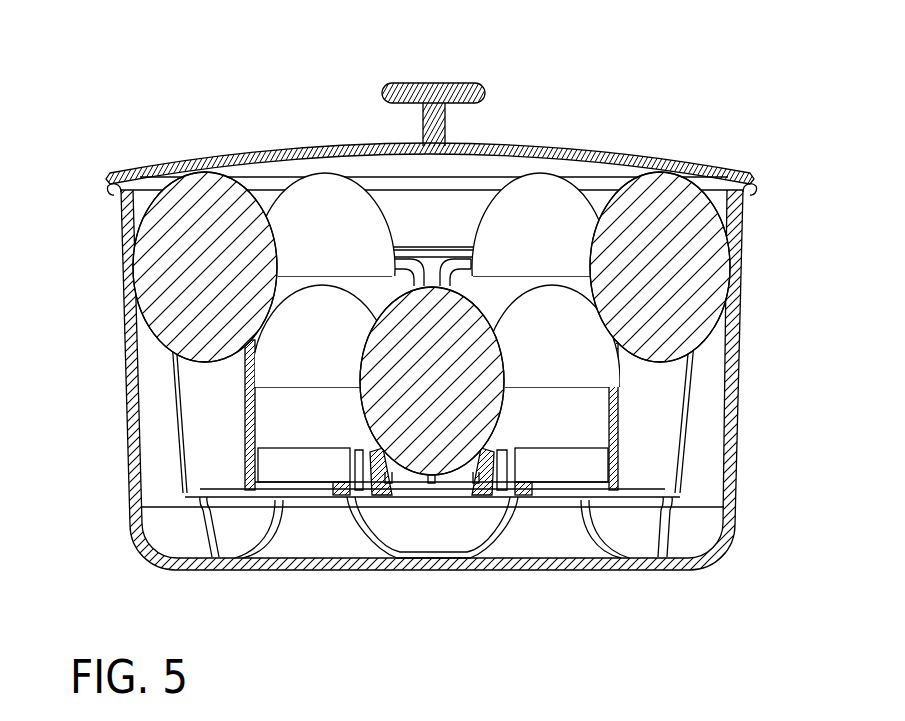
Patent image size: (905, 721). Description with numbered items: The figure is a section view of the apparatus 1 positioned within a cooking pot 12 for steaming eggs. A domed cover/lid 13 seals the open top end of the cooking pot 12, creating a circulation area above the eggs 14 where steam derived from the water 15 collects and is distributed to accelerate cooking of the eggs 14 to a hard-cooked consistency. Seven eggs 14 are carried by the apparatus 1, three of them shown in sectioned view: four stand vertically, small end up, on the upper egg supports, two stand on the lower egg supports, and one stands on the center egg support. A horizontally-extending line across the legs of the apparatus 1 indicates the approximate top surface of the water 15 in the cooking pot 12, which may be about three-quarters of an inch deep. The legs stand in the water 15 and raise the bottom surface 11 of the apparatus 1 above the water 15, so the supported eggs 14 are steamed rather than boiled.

The apparatus 1 is at (689, 434).
The bottom surface 11 is at (524, 494).
The cooking pot 12 is at (122, 354).
The domed cover/lid 13 is at (225, 153).
The egg 14 is at (657, 237).
The water 15 is at (704, 506).